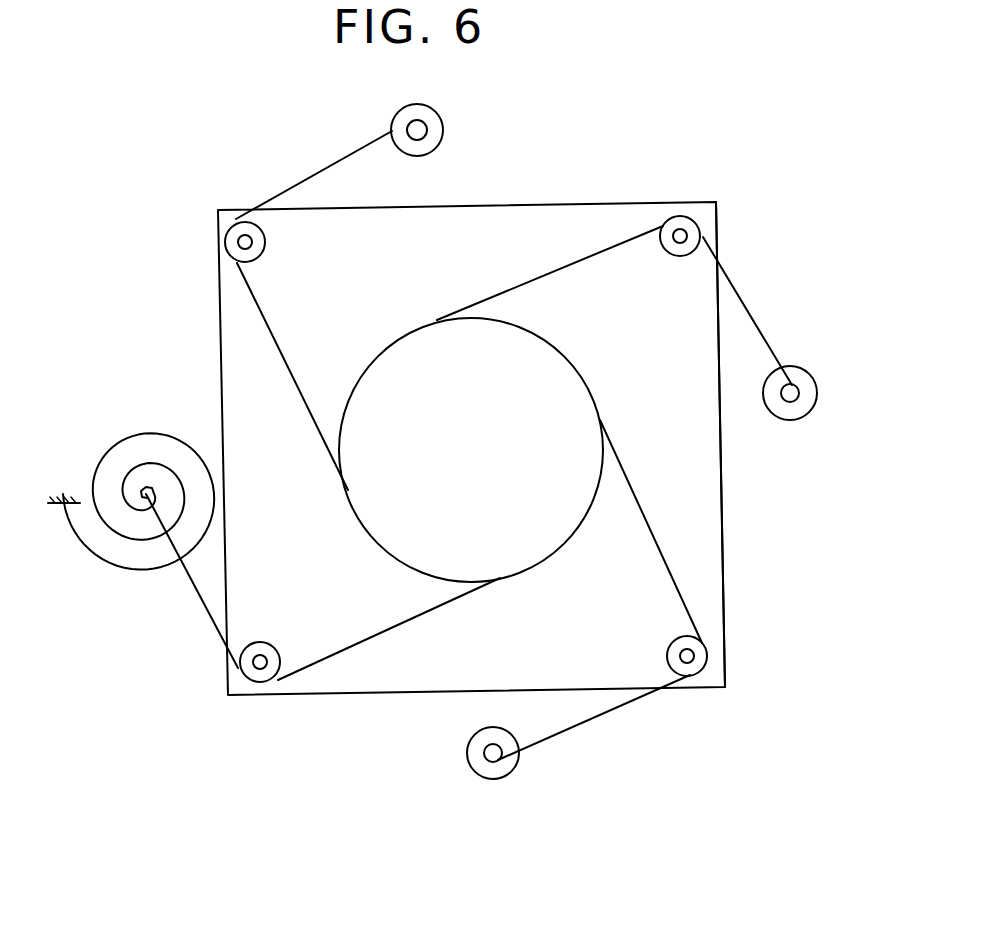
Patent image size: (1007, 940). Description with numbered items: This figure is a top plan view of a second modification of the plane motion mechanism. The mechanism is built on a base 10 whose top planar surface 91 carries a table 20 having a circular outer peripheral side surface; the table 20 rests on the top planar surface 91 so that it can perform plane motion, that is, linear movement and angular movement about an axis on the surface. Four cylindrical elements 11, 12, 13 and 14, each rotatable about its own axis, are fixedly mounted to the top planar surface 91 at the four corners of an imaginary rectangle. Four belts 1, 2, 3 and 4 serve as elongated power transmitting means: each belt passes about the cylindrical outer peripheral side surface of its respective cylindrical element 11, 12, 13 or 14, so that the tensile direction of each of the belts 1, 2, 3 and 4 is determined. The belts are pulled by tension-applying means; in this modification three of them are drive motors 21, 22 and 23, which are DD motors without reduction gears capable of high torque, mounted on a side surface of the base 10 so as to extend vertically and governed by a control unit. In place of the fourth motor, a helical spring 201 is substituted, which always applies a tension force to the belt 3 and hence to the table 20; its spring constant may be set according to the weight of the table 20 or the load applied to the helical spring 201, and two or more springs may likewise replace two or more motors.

The belt 1 is at (590, 255).
The belt 2 is at (280, 353).
The belt 3 is at (362, 641).
The belt 4 is at (640, 507).
The base 10 is at (727, 554).
The cylindrical element 11 is at (677, 218).
The cylindrical element 12 is at (262, 243).
The cylindrical element 13 is at (263, 645).
The cylindrical element 14 is at (675, 648).
The table 20 is at (580, 380).
The drive motor 21 is at (805, 377).
The drive motor 22 is at (502, 773).
The drive motor 23 is at (438, 133).
The top planar surface 91 is at (708, 472).
The helical spring 201 is at (148, 440).